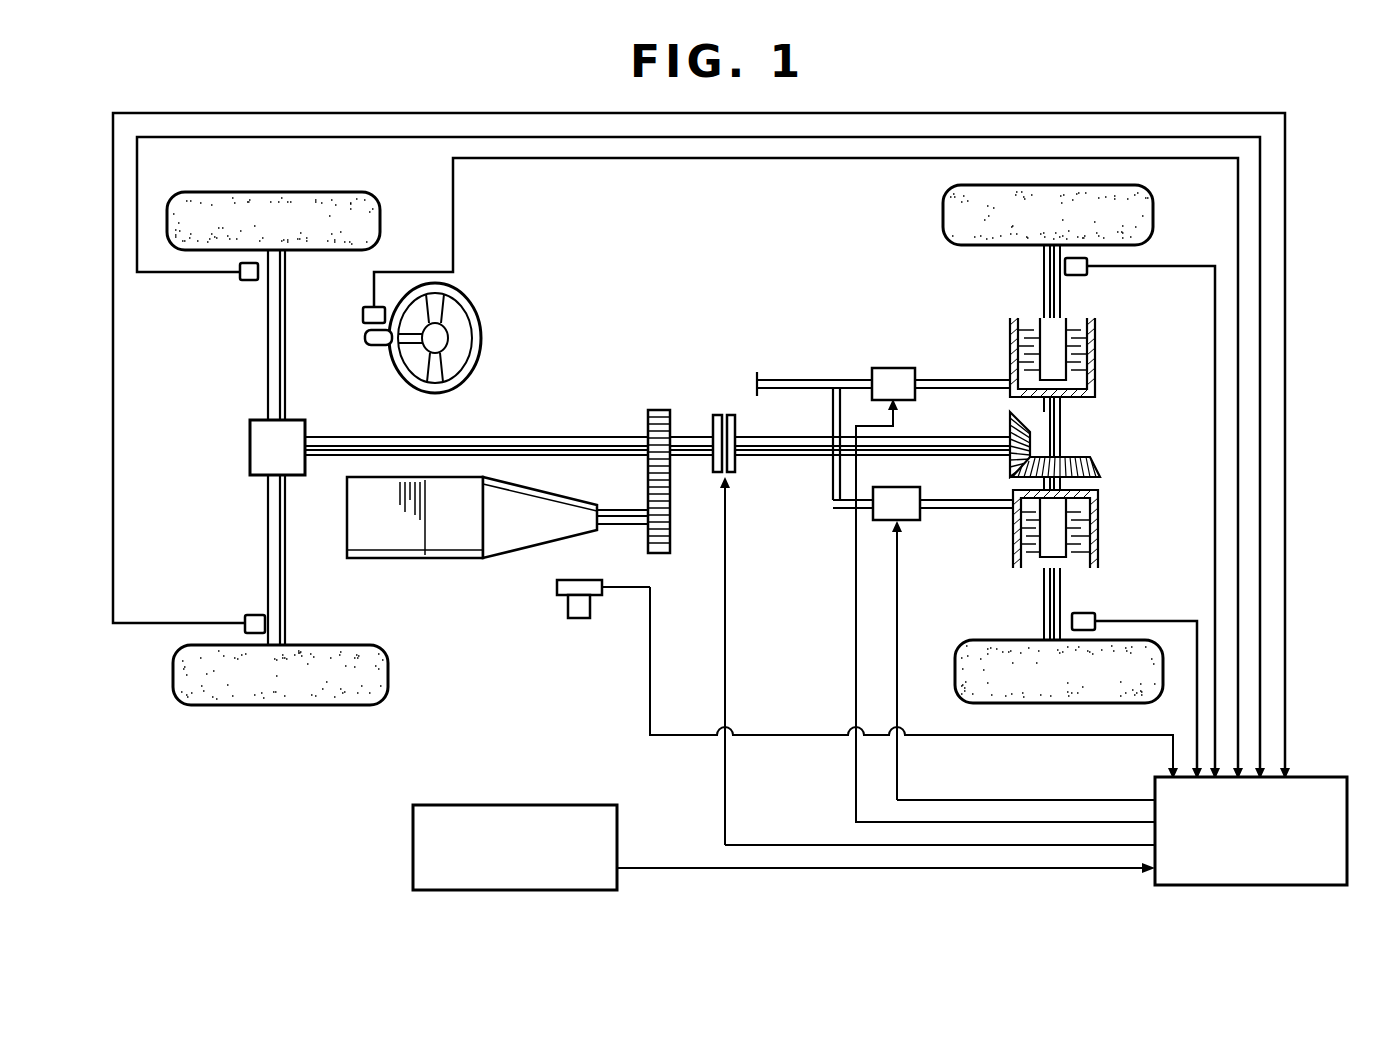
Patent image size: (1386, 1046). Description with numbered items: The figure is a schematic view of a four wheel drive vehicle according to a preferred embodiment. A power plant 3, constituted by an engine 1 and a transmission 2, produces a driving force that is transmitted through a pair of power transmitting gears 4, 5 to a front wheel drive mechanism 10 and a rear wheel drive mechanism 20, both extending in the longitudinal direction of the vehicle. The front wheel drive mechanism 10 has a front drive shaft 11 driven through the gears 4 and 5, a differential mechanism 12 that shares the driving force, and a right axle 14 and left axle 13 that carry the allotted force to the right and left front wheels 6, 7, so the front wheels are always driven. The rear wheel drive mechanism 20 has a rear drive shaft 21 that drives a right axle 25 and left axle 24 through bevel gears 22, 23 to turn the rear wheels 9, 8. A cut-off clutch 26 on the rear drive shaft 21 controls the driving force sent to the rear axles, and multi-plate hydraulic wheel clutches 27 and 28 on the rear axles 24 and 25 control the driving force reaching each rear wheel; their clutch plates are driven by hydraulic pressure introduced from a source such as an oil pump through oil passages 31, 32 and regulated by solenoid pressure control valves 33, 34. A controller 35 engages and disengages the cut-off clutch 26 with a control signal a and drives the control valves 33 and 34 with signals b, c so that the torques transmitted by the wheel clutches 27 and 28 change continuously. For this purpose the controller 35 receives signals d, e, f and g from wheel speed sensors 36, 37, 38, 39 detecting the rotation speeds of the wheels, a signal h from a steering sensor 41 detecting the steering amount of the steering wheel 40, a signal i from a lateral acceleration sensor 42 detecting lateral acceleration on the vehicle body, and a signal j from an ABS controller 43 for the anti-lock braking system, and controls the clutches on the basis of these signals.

The engine 1 is at (396, 545).
The transmission 2 is at (540, 533).
The power plant 3 is at (470, 572).
The power transmitting gear 4 is at (672, 525).
The power transmitting gear 5 is at (648, 417).
The front wheel 6 is at (285, 700).
The front wheel 7 is at (374, 205).
The rear wheel 8 is at (956, 690).
The rear wheel 9 is at (943, 233).
The front wheel drive mechanism 10 is at (546, 423).
The front drive shaft 11 is at (402, 436).
The differential mechanism 12 is at (250, 447).
The left axle 13 is at (268, 530).
The right axle 14 is at (268, 377).
The rear wheel drive mechanism 20 is at (1100, 420).
The rear drive shaft 21 is at (775, 456).
The bevel gear 22 is at (1010, 462).
The bevel gear 23 is at (1097, 466).
The left axle 24 is at (1042, 602).
The right axle 25 is at (1040, 285).
The cut-off clutch 26 is at (717, 413).
The wheel clutch 27 is at (1098, 500).
The wheel clutch 28 is at (1095, 355).
The oil passage 31 is at (978, 510).
The oil passage 32 is at (985, 378).
The pressure control valve 33 is at (905, 522).
The pressure control valve 34 is at (890, 367).
The controller 35 is at (1322, 777).
The wheel speed sensor 36 is at (252, 614).
The wheel speed sensor 37 is at (250, 282).
The wheel speed sensor 38 is at (1084, 612).
The wheel speed sensor 39 is at (1078, 276).
The steering wheel 40 is at (482, 330).
The steering sensor 41 is at (362, 314).
The lateral acceleration sensor 42 is at (580, 618).
The ABS controller 43 is at (413, 838).
The control signal a is at (725, 655).
The signal b is at (897, 676).
The signal c is at (856, 672).
The signal d is at (1285, 590).
The signal e is at (1262, 522).
The signal f is at (1197, 600).
The signal g is at (1215, 486).
The signal h is at (1232, 422).
The signal i is at (1025, 736).
The signal j is at (1008, 870).